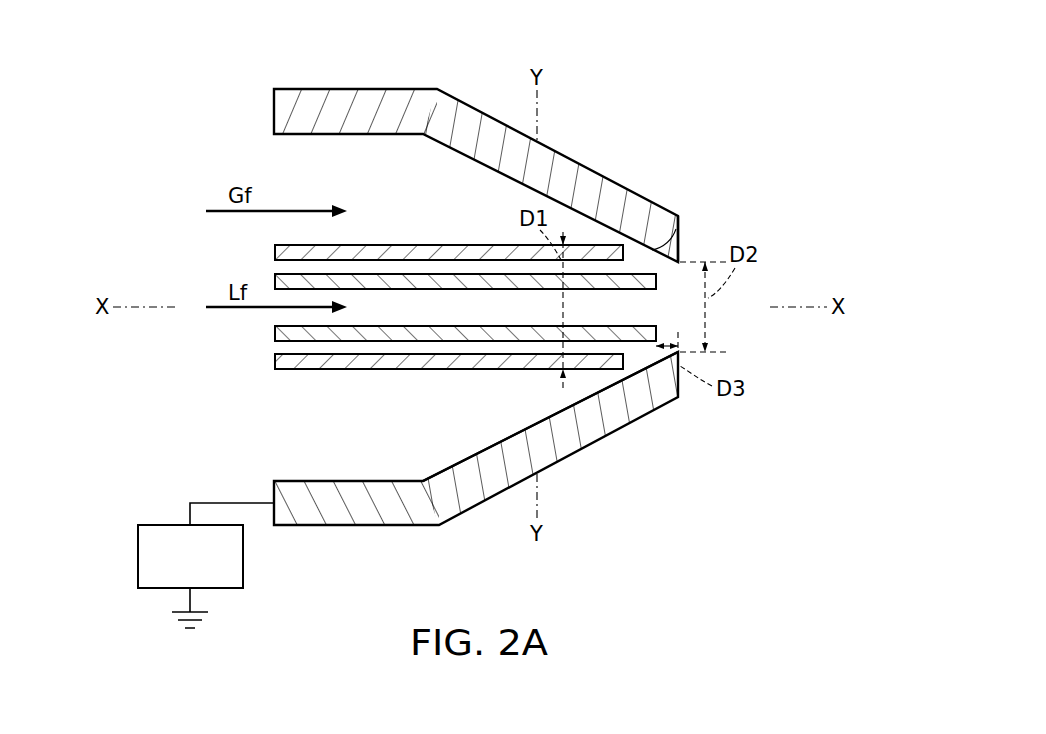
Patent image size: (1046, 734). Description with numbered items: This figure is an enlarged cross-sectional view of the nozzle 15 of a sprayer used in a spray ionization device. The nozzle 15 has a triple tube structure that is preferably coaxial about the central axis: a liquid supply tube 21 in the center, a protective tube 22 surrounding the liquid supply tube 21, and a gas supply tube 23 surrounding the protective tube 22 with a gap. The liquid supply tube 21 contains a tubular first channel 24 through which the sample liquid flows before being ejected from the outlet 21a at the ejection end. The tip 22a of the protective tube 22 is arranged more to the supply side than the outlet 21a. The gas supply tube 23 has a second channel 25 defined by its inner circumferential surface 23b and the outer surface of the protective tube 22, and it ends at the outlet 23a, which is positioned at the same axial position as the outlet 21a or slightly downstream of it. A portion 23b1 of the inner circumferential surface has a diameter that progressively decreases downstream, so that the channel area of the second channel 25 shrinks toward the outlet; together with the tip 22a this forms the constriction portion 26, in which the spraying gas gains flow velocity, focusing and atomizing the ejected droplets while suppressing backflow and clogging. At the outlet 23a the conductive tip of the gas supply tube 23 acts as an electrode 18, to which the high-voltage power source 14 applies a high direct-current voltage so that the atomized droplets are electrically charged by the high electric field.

The high-voltage power source 14 is at (138, 556).
The nozzle 15 is at (281, 57).
The electrode 18 is at (678, 182).
The liquid supply tube 21 is at (275, 283).
The outlet 21a is at (657, 283).
The protective tube 22 is at (275, 253).
The tip 22a is at (626, 360).
The gas supply tube 23 is at (488, 332).
The outlet 23a is at (679, 252).
The inner circumferential surface 23b is at (347, 483).
The portion of the inner circumferential surface 23b1 is at (603, 389).
The first channel 24 is at (278, 317).
The second channel 25 is at (300, 422).
The constriction portion 26 is at (678, 240).